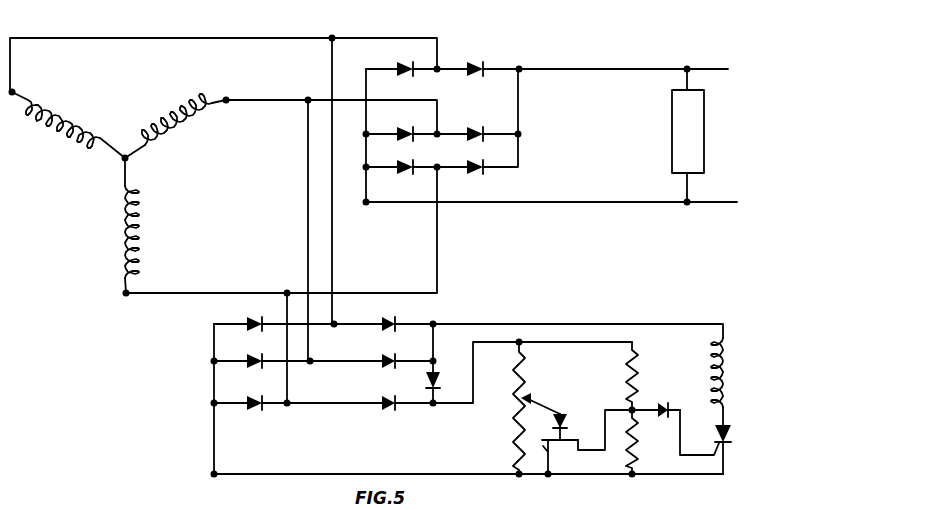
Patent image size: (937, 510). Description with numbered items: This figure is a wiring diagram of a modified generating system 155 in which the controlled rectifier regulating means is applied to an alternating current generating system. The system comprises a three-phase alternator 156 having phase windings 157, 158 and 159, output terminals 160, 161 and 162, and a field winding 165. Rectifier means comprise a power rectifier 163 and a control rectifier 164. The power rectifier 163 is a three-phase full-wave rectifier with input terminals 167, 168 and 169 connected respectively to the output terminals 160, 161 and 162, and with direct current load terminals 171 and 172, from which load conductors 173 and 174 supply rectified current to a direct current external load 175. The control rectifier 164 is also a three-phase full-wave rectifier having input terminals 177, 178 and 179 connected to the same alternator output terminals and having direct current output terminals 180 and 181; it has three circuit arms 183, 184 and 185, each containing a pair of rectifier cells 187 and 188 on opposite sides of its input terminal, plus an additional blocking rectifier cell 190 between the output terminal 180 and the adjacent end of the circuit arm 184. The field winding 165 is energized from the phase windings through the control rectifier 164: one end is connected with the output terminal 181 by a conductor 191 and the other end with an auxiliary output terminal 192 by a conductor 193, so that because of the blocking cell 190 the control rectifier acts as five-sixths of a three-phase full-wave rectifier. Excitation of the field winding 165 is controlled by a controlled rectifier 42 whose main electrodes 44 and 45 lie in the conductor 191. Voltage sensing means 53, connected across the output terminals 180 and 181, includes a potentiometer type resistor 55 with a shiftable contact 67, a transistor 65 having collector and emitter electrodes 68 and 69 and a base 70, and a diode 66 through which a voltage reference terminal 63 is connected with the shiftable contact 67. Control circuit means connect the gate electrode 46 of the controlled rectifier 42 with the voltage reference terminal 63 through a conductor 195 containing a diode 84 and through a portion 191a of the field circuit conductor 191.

The three-phase alternator 156 is at (223, 198).
The phase winding 157 is at (66, 110).
The phase winding 158 is at (180, 125).
The phase winding 159 is at (140, 236).
The output terminal 160 is at (14, 91).
The output terminal 161 is at (228, 98).
The output terminal 162 is at (126, 296).
The power rectifier 163 is at (442, 132).
The input terminal 167 is at (440, 67).
The input terminal 168 is at (440, 133).
The input terminal 169 is at (440, 166).
The direct current load terminal 171 is at (520, 67).
The direct current load terminal 172 is at (367, 204).
The generating system 155 is at (563, 117).
The load conductor 173 is at (614, 68).
The load conductor 174 is at (574, 201).
The direct current external load 175 is at (706, 118).
The control rectifier 164 is at (419, 383).
The rectifier cell 187 is at (248, 353).
The circuit arm 183 is at (276, 316).
The circuit arm 184 is at (276, 352).
The circuit arm 185 is at (270, 402).
The input terminal 177 is at (336, 322).
The input terminal 178 is at (313, 360).
The input terminal 179 is at (289, 406).
The direct current output terminal 180 is at (434, 406).
The rectifier cell 188 is at (390, 320).
The blocking rectifier cell 190 is at (437, 380).
The auxiliary output terminal 192 is at (436, 322).
The direct current output terminal 181 is at (218, 473).
The conductor 191 is at (420, 473).
The portion of field circuit conductor 191a is at (655, 474).
The conductor 193 is at (594, 322).
The potentiometer type resistor 55 is at (522, 384).
The voltage sensing means 53 is at (576, 422).
The transistor 65 is at (572, 438).
The diode 66 is at (554, 418).
The shiftable contact 67 is at (532, 398).
The collector electrode 68 is at (580, 450).
The emitter electrode 69 is at (549, 448).
The base 70 is at (549, 440).
The voltage reference terminal 63 is at (644, 398).
The conductor 195 is at (680, 428).
The diode 84 is at (665, 405).
The gate electrode 46 is at (716, 446).
The field winding 165 is at (730, 358).
The controlled rectifier 42 is at (733, 434).
The main electrode 44 is at (727, 422).
The main electrode 45 is at (731, 444).